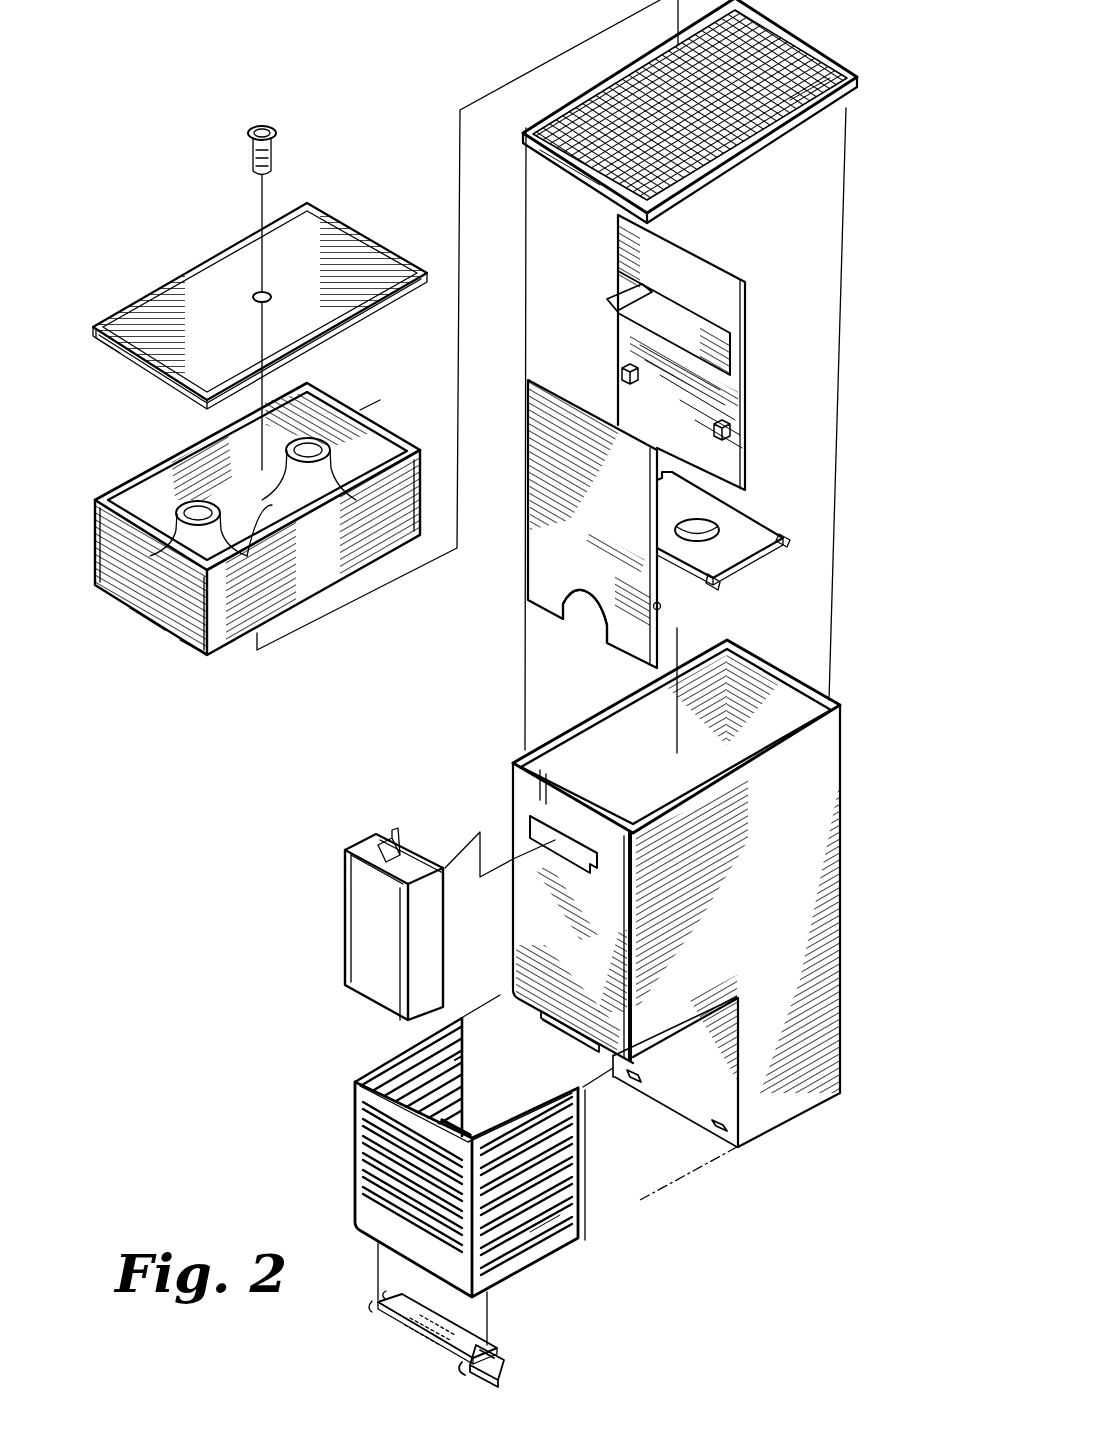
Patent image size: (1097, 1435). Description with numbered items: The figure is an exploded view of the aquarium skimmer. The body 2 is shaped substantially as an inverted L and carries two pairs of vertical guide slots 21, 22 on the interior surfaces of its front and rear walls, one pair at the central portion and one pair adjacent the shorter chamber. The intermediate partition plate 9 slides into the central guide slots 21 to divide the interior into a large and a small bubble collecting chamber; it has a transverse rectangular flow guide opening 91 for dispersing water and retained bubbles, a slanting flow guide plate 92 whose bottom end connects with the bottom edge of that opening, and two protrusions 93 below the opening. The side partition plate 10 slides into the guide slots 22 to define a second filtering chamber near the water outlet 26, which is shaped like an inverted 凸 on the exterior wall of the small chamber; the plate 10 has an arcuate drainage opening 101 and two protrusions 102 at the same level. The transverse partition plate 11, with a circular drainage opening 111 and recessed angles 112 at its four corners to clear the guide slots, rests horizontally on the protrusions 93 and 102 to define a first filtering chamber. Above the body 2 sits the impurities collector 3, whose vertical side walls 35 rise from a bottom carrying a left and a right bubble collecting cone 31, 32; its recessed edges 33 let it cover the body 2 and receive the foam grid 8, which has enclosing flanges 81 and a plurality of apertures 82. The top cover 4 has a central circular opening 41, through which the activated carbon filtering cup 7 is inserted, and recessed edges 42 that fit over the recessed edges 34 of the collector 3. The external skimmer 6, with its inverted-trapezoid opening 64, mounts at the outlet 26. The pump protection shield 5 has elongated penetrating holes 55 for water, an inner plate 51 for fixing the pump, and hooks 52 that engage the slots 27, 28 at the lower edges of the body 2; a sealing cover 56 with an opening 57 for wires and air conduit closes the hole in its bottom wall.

The body 2 is at (656, 915).
The impurities collector 3 is at (250, 532).
The top cover 4 is at (260, 301).
The pump protection shield 5 is at (444, 1157).
The external skimmer 6 is at (364, 907).
The activated carbon filtering cup 7 is at (276, 127).
The foam grid 8 is at (690, 112).
The intermediate partition plate 9 is at (678, 352).
The side partition plate 10 is at (606, 524).
The transverse partition plate 11 is at (743, 530).
The guide slots 21 is at (583, 845).
The guide slots 22 is at (540, 756).
The water outlet 26 is at (528, 823).
The slots 27 is at (565, 1040).
The slots 28 is at (713, 1132).
The left bubble collecting cone 31 is at (178, 488).
The right bubble collecting cone 32 is at (310, 440).
The recessed edges 33 is at (192, 648).
The recessed edges 34 is at (370, 412).
The vertical side walls 35 is at (148, 612).
The circular opening 41 is at (254, 285).
The recessed edges 42 is at (121, 362).
The inner plate 51 is at (471, 1126).
The hooks 52 is at (464, 1064).
The elongated penetrating holes 55 is at (548, 1240).
The sealing cover 56 is at (378, 1325).
The opening 57 is at (443, 1360).
The opening 64 is at (392, 851).
The enclosing flanges 81 is at (572, 166).
The apertures 82 is at (797, 110).
The flow guide opening 91 is at (690, 317).
The flow guide plate 92 is at (606, 301).
The protrusions 93 is at (620, 374).
The arcuate drainage opening 101 is at (600, 642).
The protrusions 102 is at (660, 607).
The circular drainage opening 111 is at (702, 533).
The recessed angles 112 is at (786, 543).